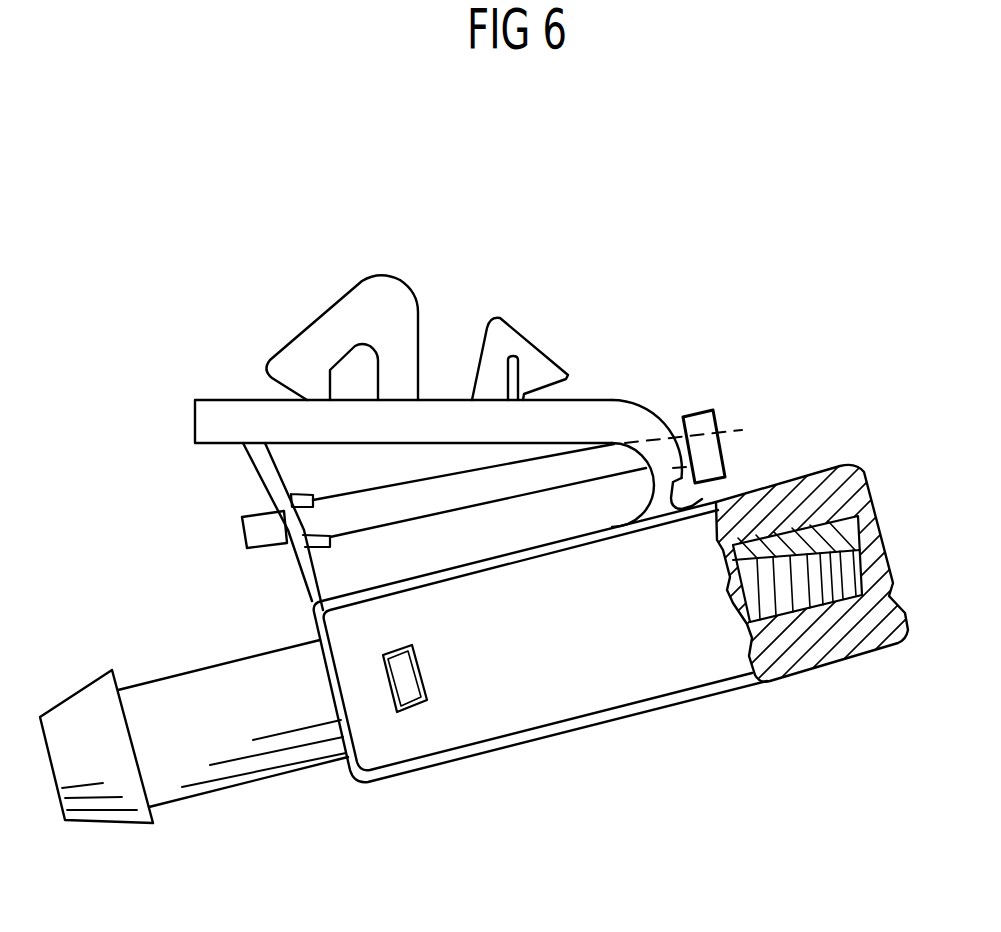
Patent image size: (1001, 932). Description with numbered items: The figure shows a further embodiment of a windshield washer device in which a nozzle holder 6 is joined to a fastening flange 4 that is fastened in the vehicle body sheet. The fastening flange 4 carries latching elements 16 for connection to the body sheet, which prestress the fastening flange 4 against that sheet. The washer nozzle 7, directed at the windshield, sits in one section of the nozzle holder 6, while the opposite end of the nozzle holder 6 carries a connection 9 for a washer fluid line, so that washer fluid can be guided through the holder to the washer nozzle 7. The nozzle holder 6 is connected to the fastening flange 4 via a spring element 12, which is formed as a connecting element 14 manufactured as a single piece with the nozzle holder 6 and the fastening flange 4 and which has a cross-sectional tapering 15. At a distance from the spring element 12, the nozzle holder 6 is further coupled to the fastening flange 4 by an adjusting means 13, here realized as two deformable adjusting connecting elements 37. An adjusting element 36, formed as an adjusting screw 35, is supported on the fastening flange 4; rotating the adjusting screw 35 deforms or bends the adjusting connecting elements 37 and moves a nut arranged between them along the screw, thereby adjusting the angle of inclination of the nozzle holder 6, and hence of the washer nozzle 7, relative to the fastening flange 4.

The fastening flange 4 is at (222, 423).
The nozzle holder 6 is at (540, 712).
The washer nozzle 7 is at (858, 577).
The connection 9 is at (80, 712).
The spring element 12 is at (707, 488).
The adjusting means 13 is at (745, 425).
The connecting element 14 is at (637, 420).
The cross-sectional tapering 15 is at (642, 497).
The latching elements 16 is at (347, 310).
The adjusting screw 35 is at (468, 488).
The adjusting element 36 is at (575, 435).
The adjusting connecting elements 37 is at (268, 475).